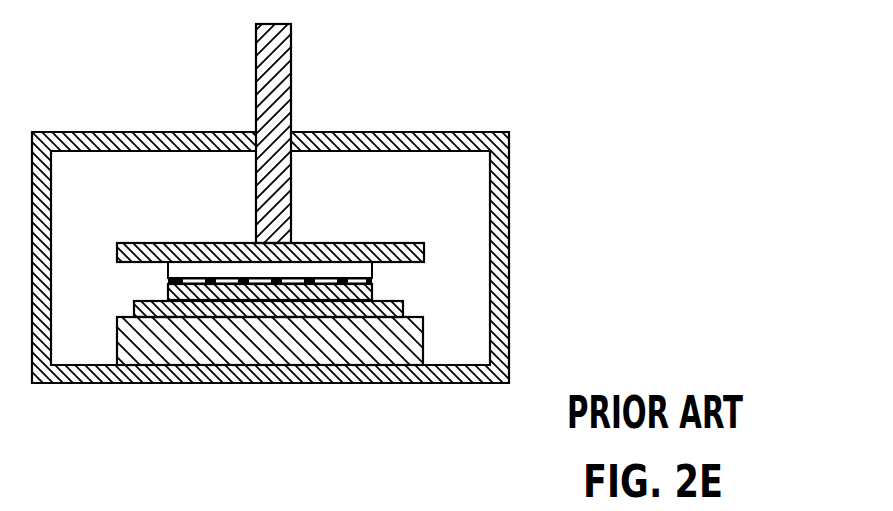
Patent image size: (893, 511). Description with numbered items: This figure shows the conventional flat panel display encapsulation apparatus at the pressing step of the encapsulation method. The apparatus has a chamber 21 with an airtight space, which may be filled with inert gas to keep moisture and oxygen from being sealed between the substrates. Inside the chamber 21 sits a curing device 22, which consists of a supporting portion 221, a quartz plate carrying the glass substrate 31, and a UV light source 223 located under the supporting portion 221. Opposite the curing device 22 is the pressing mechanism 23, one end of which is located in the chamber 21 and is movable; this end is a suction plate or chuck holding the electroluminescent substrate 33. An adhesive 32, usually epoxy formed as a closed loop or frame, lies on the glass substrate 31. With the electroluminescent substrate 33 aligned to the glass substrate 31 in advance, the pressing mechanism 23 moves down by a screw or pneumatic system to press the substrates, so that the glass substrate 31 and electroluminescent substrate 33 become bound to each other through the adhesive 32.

The chamber 21 is at (509, 166).
The curing device 22 is at (389, 328).
The pressing mechanism 23 is at (288, 80).
The glass substrate 31 is at (372, 292).
The adhesive 32 is at (313, 284).
The electroluminescent substrate 33 is at (363, 273).
The supporting portion 221 is at (403, 309).
The UV light source 223 is at (423, 347).